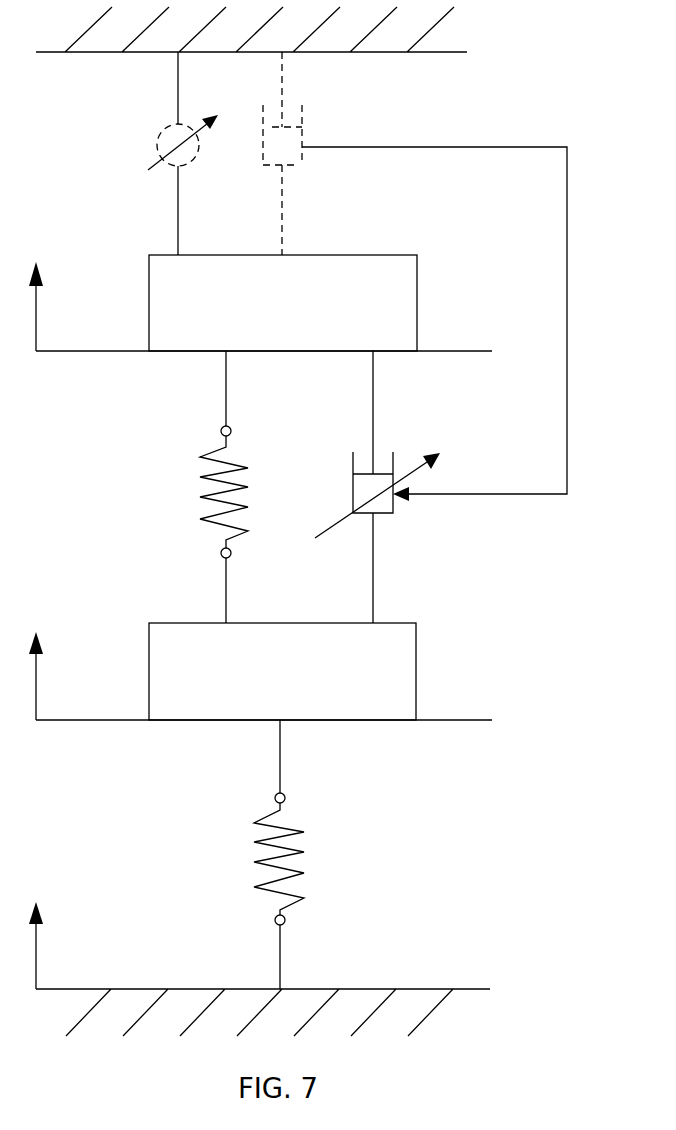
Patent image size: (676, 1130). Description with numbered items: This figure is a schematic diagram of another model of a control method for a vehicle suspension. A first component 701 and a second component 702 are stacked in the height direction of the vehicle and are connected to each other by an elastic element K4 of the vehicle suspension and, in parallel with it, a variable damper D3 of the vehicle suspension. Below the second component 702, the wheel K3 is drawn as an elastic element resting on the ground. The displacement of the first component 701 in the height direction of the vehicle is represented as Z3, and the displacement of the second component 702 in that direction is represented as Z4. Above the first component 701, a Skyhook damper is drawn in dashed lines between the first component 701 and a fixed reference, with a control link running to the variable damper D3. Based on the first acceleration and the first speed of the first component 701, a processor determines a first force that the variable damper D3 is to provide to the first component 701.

The first component 701 is at (283, 303).
The second component 702 is at (282, 671).
The elastic element K4 is at (194, 487).
The variable damper D3 is at (375, 487).
The wheel K3 is at (307, 854).
The displacement of the first component Z3 is at (34, 294).
The displacement of the second component Z4 is at (34, 662).
The skyhook damper Skyhook is at (387, 153).